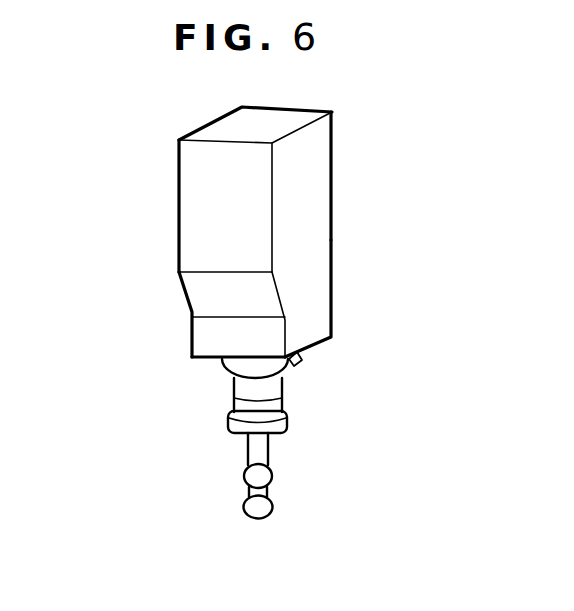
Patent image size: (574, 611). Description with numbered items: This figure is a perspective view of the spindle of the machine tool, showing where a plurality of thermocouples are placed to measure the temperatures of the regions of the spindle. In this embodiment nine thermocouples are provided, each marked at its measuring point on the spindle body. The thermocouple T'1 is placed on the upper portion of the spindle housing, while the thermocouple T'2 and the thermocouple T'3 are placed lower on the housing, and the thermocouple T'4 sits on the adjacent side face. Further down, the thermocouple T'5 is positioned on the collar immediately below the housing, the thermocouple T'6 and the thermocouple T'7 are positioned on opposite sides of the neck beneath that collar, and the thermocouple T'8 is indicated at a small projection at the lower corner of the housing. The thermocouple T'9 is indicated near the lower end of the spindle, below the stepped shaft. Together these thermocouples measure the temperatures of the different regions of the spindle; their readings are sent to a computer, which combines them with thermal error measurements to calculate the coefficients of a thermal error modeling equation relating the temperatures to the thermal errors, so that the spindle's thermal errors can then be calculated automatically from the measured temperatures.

The thermocouple T'1 is at (203, 189).
The thermocouple T'2 is at (183, 314).
The thermocouple T'3 is at (303, 275).
The thermocouple T'4 is at (365, 298).
The thermocouple T'5 is at (201, 377).
The thermocouple T'6 is at (201, 414).
The thermocouple T'7 is at (319, 430).
The thermocouple T'8 is at (363, 369).
The thermocouple T'9 is at (341, 494).